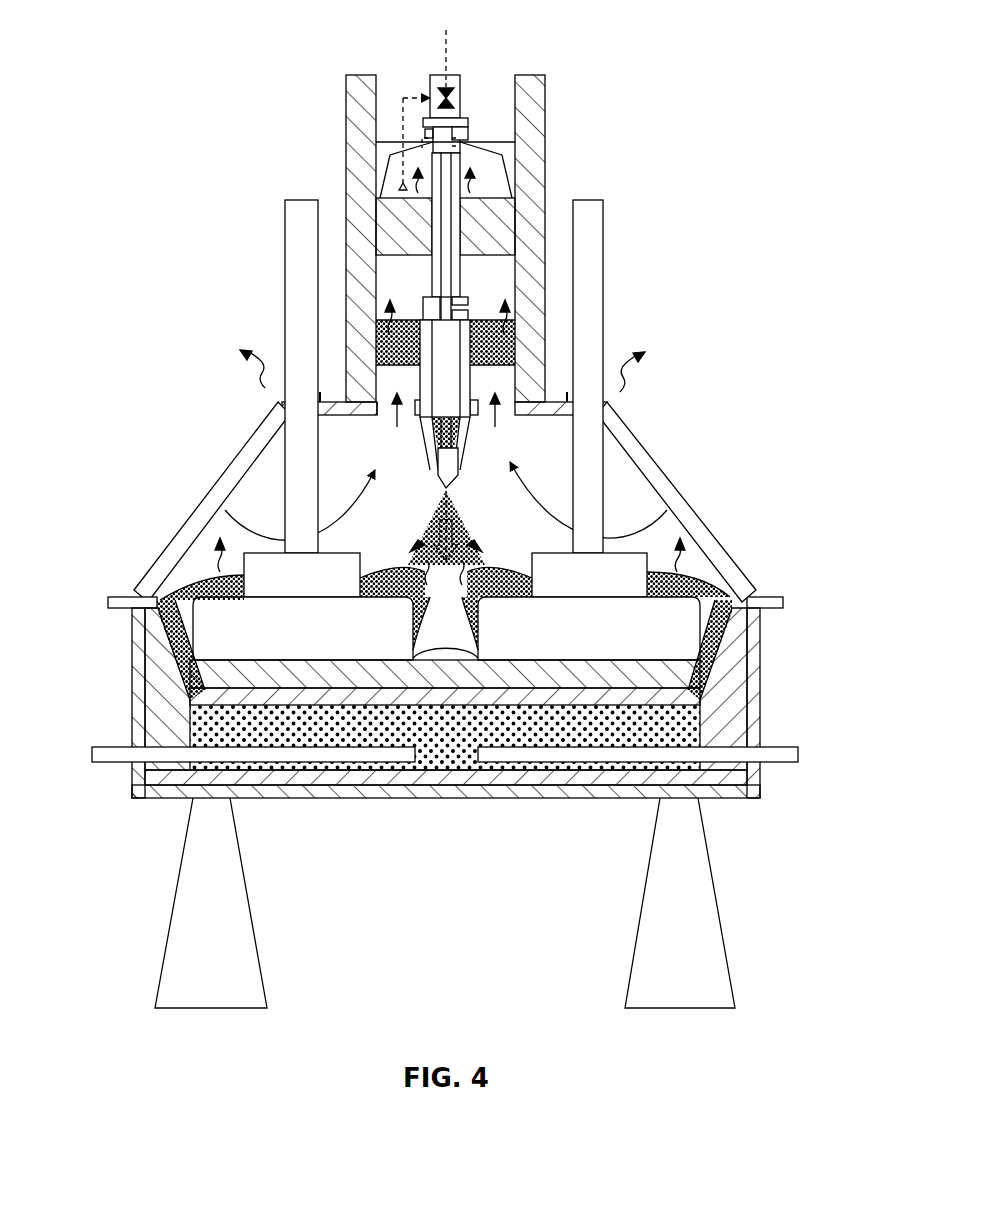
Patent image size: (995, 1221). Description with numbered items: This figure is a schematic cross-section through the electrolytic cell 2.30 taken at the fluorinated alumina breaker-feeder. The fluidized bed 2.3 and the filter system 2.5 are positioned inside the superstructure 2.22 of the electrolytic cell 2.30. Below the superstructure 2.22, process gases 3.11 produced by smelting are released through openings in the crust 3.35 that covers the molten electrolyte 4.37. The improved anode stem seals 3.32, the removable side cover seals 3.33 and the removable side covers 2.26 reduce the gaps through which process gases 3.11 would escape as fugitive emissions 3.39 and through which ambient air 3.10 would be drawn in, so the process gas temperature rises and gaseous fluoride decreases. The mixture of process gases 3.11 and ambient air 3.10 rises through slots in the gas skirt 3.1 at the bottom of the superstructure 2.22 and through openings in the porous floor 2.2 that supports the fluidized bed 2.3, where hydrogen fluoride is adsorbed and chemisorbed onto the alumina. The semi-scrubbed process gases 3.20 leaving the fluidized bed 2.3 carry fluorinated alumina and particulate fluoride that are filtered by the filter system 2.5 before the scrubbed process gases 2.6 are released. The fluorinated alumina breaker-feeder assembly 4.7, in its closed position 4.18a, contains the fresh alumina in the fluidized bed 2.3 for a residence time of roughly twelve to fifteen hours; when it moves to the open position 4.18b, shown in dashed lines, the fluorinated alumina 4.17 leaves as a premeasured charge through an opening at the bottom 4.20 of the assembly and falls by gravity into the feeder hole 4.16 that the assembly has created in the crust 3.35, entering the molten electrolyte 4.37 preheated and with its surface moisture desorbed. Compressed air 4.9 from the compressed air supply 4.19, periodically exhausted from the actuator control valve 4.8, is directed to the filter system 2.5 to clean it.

The porous floor 2.2 is at (400, 372).
The fluidized bed 2.3 is at (400, 340).
The filter system 2.5 is at (488, 223).
The scrubbed process gases 2.6 is at (479, 185).
The superstructure 2.22 is at (547, 92).
The removable side covers 2.26 is at (140, 585).
The electrolytic cell 2.30 is at (760, 782).
The gas skirt 3.1 is at (364, 412).
The ambient air 3.10 is at (193, 486).
The process gases 3.11 is at (684, 563).
The semi-scrubbed process gases 3.20 is at (508, 302).
The anode stem seals 3.32 is at (282, 403).
The removable side cover seals 3.33 is at (607, 404).
The crust 3.35 is at (190, 585).
The fugitive emissions 3.39 is at (240, 352).
The fluorinated alumina breaker-feeder assembly 4.7 is at (484, 381).
The actuator control valve 4.8 is at (428, 80).
The compressed air 4.9 is at (438, 217).
The feeder hole 4.16 is at (452, 604).
The fluorinated alumina 4.17 is at (469, 514).
The closed position 4.18a is at (433, 496).
The open position 4.18b is at (423, 564).
The compressed air supply 4.19 is at (448, 52).
The bottom 4.20 is at (468, 462).
The molten electrolyte 4.37 is at (687, 670).